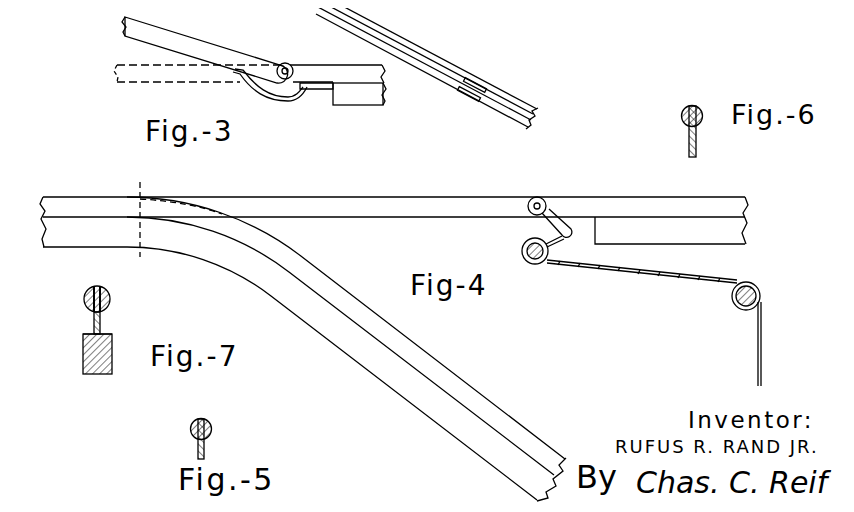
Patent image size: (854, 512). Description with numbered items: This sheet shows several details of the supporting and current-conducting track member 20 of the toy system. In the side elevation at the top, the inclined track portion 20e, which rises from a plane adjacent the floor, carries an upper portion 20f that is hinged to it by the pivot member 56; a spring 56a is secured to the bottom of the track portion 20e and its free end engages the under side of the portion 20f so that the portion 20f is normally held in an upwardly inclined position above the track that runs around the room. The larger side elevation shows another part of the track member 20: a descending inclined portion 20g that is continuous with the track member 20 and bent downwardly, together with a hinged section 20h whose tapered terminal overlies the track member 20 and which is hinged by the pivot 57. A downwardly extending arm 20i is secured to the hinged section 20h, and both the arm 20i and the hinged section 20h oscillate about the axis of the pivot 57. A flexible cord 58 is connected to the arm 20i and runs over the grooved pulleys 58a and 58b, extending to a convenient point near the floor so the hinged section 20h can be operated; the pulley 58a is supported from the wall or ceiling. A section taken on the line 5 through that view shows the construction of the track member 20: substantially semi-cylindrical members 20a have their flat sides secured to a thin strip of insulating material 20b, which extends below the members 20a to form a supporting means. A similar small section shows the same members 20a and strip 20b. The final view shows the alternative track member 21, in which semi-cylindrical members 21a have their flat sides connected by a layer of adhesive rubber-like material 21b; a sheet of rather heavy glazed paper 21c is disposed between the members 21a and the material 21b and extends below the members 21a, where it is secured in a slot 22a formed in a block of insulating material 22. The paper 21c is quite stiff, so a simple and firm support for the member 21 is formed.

In FIG. 4, the section line 5— 5 is at (148, 219).
In FIG. 6, the member forming a support and conductor 20 is at (669, 118).
In FIG. 4, the member forming a support and conductor 20 is at (394, 337).
In FIG. 6, the semi-cylindrical members 20a is at (701, 108).
In FIG. 5, the semi-cylindrical members 20a is at (191, 429).
In FIG. 6, the strip of insulating material 20b is at (689, 148).
In FIG. 5, the strip of insulating material 20b is at (205, 448).
In FIG. 3, the inclined track portion 20e is at (315, 68).
In FIG. 3, the upper hinged track portion 20f is at (170, 32).
In FIG. 4, the descending inclined portion 20g is at (427, 352).
In FIG. 4, the hinged section 20h is at (344, 198).
In FIG. 4, the downwardly extending arm 20i is at (533, 230).
In FIG. 7, the alternative track member 21 is at (110, 295).
In FIG. 7, the semi-cylindrical members 21a is at (84, 300).
In FIG. 7, the layer of adhesive rubber-like material 21b is at (92, 288).
In FIG. 7, the sheet of glazed paper 21c is at (93, 326).
In FIG. 7, the block of insulating material 22 is at (115, 352).
In FIG. 7, the slot 22a is at (112, 338).
In FIG. 3, the pivot member 56 is at (288, 64).
In FIG. 3, the spring 56a is at (287, 102).
In FIG. 4, the pivot 57 is at (542, 199).
In FIG. 4, the cord 58 is at (623, 276).
In FIG. 4, the grooved pulley 58a is at (539, 266).
In FIG. 4, the grooved pulley 58b is at (734, 304).